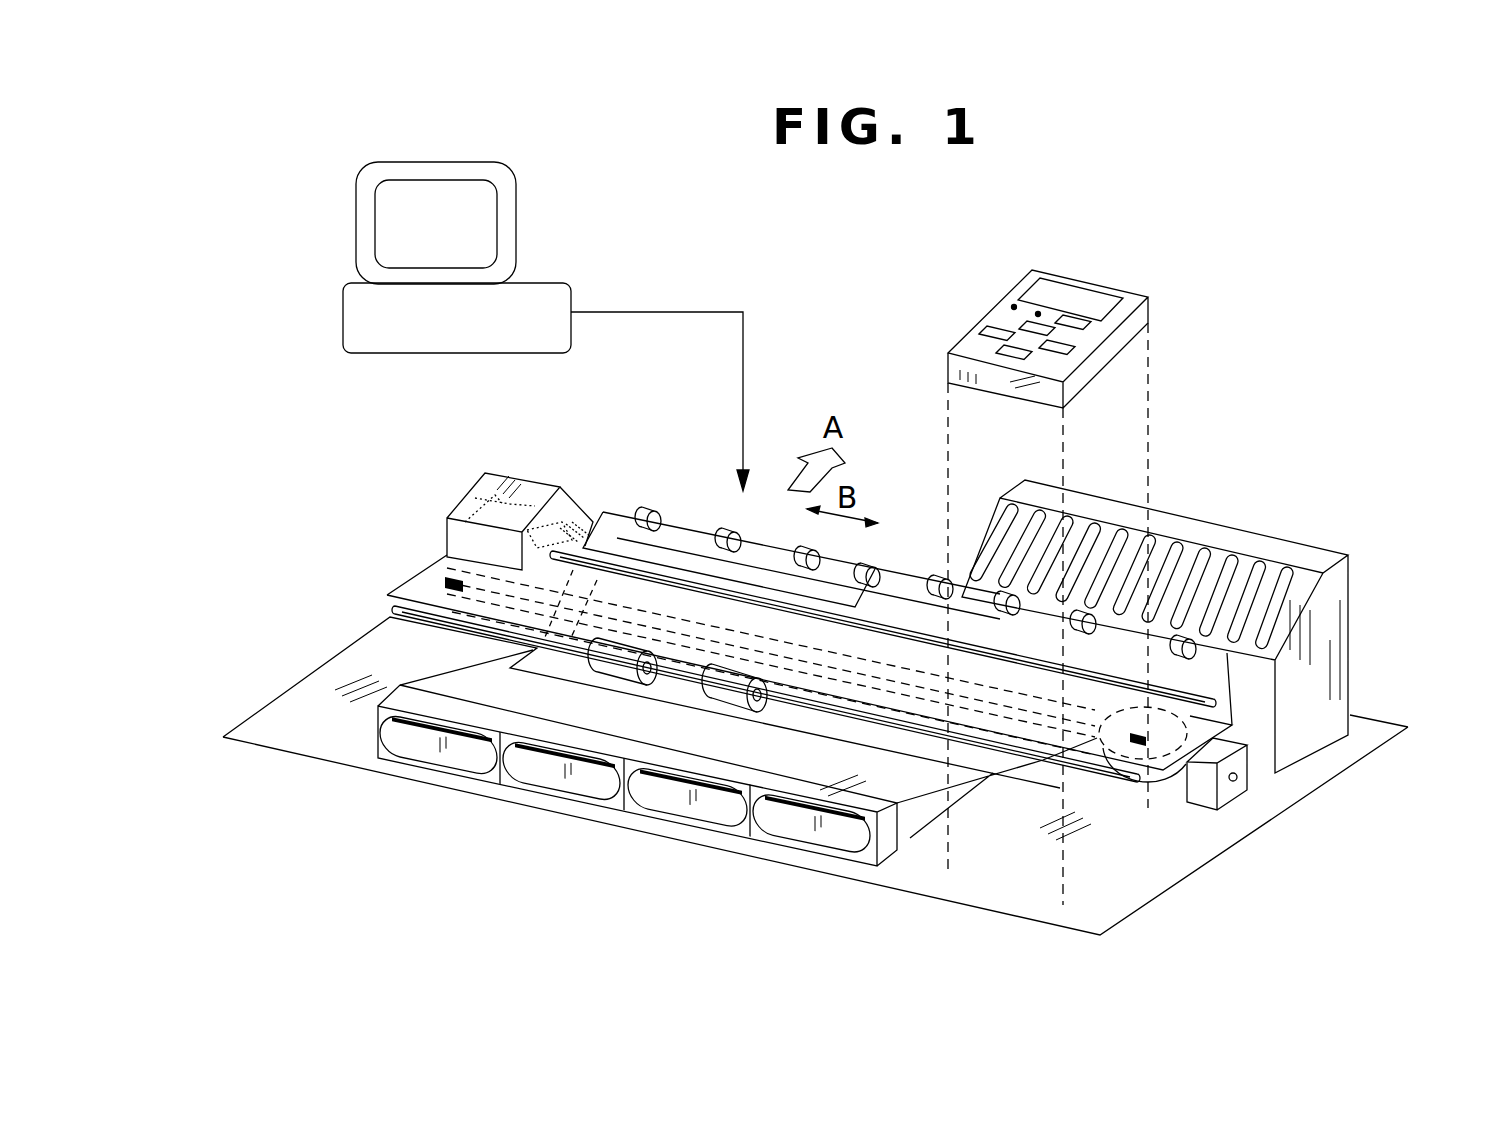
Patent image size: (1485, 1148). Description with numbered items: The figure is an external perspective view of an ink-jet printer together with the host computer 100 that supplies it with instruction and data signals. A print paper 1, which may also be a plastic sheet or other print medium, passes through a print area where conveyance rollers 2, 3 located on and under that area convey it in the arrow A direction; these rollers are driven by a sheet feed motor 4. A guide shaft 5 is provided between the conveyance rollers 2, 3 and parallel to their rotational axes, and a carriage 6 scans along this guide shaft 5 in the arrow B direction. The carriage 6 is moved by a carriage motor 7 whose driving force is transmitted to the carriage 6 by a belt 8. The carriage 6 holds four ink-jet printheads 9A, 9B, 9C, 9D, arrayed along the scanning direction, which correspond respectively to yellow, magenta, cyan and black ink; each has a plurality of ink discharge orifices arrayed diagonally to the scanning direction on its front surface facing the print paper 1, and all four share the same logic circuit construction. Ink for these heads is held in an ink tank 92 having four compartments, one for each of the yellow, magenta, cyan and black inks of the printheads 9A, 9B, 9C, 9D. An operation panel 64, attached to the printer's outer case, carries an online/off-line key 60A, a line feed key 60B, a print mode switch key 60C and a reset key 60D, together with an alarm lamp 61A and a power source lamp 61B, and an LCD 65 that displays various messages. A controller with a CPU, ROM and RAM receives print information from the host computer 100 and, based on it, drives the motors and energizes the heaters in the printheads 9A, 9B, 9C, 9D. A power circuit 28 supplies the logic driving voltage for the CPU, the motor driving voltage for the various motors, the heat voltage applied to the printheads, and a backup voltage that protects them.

The host computer 100 is at (549, 296).
The power source lamp 61B is at (1014, 305).
The alarm lamp 61A is at (1038, 312).
The LCD 65 is at (1060, 296).
The line feed key 60B is at (1040, 343).
The print mode switch key 60C is at (1030, 328).
The reset key 60D is at (1005, 350).
The online/off-line key 60A is at (1055, 342).
The operation panel 64 is at (1145, 316).
The printhead (K head) 9D is at (450, 505).
The printhead (C head) 9C is at (518, 503).
The printhead (M head) 9B is at (548, 500).
The printhead (Y head) 9A is at (560, 520).
The carriage 6 is at (445, 541).
The print paper 1 is at (677, 562).
The conveyance roller 2 is at (862, 563).
The power circuit 28 is at (1207, 530).
The guide shaft 5 is at (1215, 690).
The conveyance roller 3 is at (757, 712).
The ink tank 92 is at (797, 833).
The sheet feed motor 4 is at (1233, 790).
The carriage motor 7 is at (1173, 788).
The belt 8 is at (1098, 748).